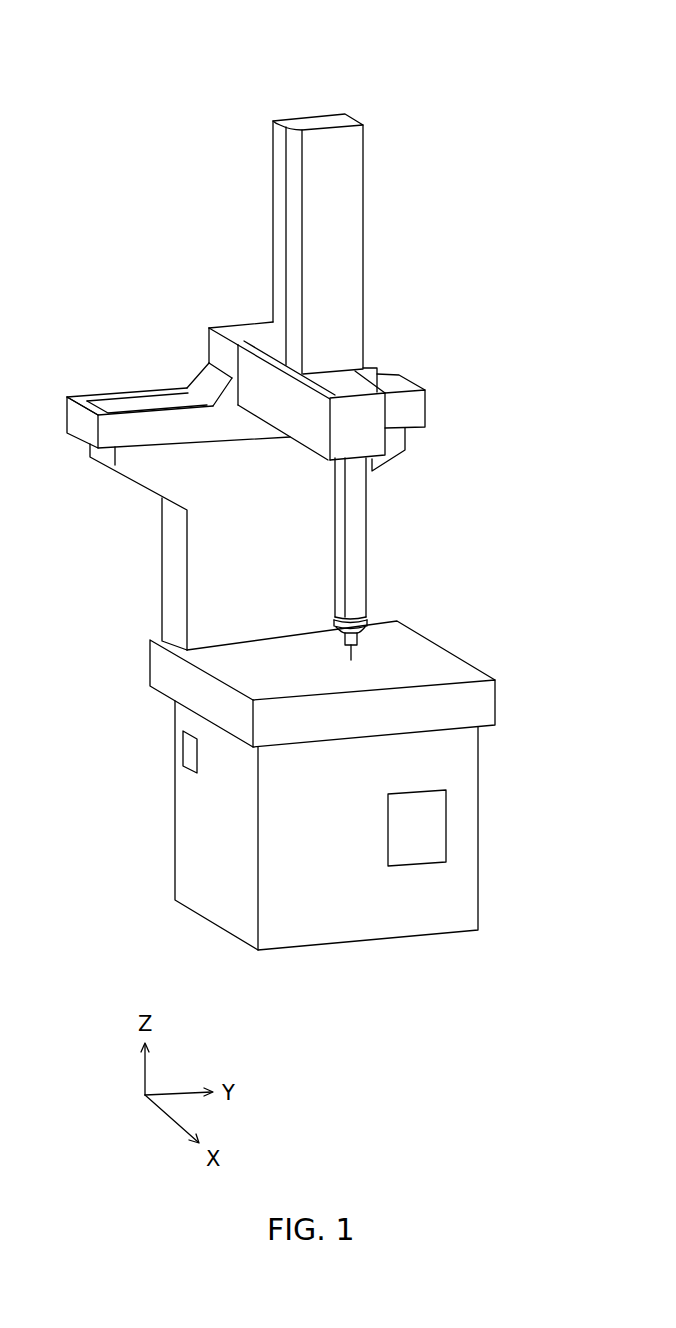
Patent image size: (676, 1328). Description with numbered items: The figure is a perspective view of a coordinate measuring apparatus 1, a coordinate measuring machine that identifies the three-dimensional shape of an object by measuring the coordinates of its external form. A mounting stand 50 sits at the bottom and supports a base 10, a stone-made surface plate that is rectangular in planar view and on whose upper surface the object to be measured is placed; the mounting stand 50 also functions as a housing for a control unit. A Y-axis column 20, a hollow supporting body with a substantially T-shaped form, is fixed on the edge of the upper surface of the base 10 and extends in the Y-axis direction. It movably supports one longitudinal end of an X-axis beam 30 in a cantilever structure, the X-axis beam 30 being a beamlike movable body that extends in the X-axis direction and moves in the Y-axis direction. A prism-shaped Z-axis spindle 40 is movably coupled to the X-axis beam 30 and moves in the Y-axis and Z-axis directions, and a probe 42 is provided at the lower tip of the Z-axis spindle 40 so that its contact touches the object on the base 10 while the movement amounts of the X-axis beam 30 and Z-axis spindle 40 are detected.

The coordinate measuring apparatus 1 is at (334, 44).
The base 10 is at (493, 712).
The Y-axis column 20 is at (141, 480).
The X-axis beam 30 is at (304, 428).
The Z-axis spindle 40 is at (366, 512).
The probe 42 is at (364, 637).
The mounting stand 50 is at (473, 775).